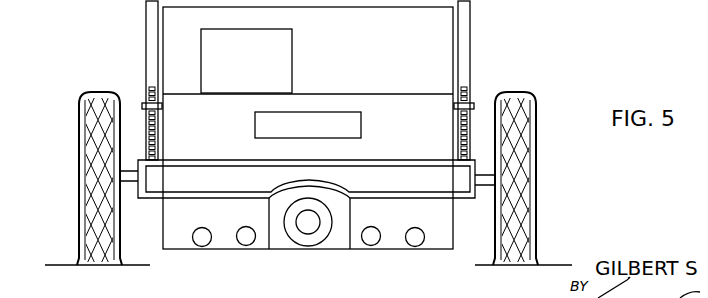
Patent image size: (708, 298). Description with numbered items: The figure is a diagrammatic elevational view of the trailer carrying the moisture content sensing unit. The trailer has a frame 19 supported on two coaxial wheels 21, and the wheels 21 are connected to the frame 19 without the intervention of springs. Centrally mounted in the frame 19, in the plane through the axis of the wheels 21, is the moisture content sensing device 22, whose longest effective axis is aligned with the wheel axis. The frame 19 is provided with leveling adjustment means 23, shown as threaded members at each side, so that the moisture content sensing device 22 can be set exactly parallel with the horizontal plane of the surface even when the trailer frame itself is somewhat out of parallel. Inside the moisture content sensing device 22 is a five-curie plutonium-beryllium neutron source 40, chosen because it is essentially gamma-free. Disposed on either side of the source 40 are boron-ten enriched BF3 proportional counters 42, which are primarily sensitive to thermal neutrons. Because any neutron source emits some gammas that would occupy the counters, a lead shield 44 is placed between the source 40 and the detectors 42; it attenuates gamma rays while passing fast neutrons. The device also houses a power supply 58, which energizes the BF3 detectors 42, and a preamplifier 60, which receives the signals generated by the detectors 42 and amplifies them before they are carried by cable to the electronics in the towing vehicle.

The frame 19 is at (464, 200).
The wheels 21 is at (79, 131).
The moisture content sensing device 22 is at (176, 254).
The leveling adjustment means 23 is at (147, 102).
The plutonium-beryllium neutron source 40 is at (309, 234).
The BF3 proportional counters 42 is at (246, 246).
The lead shield 44 is at (284, 242).
The power supply 58 is at (292, 66).
The preamplifier 60 is at (361, 125).